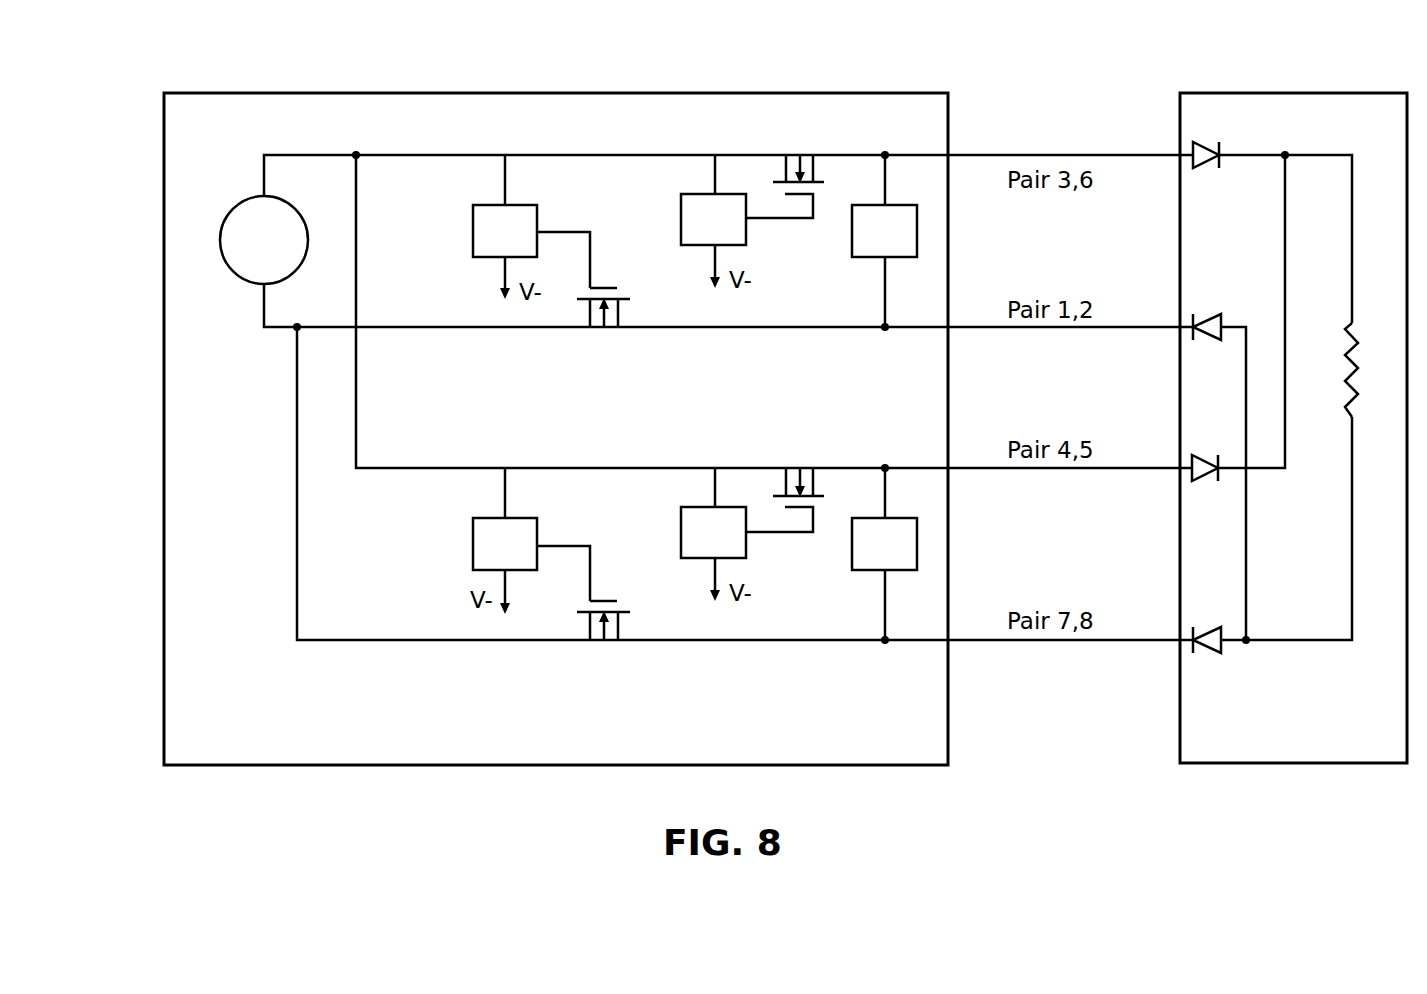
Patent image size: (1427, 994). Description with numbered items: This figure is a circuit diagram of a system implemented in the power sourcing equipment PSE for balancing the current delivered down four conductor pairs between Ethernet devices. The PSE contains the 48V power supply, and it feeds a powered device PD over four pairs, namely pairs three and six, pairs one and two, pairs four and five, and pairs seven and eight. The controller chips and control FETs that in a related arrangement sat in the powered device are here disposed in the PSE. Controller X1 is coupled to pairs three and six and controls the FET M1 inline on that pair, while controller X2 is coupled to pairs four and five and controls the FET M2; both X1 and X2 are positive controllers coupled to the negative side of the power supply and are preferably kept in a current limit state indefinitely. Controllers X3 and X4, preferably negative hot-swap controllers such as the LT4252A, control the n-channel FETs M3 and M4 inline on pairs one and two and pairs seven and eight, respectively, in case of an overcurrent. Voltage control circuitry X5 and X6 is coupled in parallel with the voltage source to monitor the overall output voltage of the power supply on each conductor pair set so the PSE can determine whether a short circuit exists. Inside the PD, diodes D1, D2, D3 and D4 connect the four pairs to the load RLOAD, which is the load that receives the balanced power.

The power sourcing equipment PSE is at (556, 413).
The powered device PD is at (1293, 411).
The 48V power supply 48V is at (264, 240).
The controller X1 is at (713, 219).
The controller X2 is at (713, 532).
The controller X3 is at (505, 231).
The controller X4 is at (505, 544).
The voltage control circuitry X5 is at (884, 231).
The voltage control circuitry X6 is at (884, 544).
The FET M1 is at (785, 170).
The FET M2 is at (785, 483).
The n-channel FET M3 is at (583, 297).
The n-channel FET M4 is at (583, 611).
The diode D1 is at (1208, 139).
The diode D2 is at (1208, 313).
The diode D3 is at (1204, 454).
The diode D4 is at (1206, 624).
The load RLOAD is at (1368, 370).